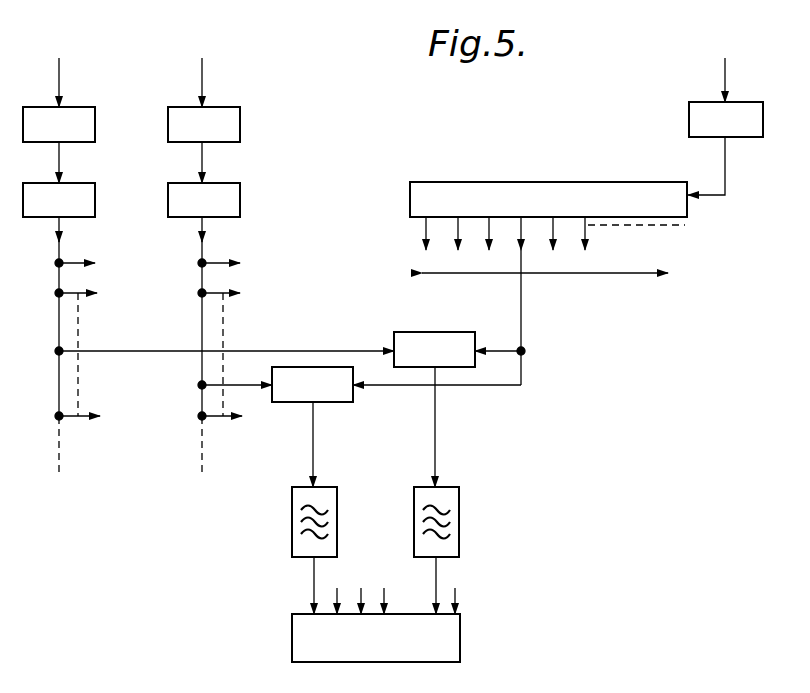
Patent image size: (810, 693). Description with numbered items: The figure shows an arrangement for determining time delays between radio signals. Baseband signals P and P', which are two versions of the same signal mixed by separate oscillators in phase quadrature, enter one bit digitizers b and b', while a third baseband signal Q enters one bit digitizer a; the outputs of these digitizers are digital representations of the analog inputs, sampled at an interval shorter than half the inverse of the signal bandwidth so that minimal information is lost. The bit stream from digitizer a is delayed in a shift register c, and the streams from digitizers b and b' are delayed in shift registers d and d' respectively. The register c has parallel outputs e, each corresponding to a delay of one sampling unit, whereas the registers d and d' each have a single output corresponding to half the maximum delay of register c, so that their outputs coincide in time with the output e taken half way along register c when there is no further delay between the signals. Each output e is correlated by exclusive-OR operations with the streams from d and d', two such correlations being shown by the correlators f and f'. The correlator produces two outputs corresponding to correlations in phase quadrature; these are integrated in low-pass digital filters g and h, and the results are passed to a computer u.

The baseband signal P is at (56, 69).
The baseband signal P' is at (205, 68).
The baseband signal Q is at (724, 67).
The one bit digitizer a is at (678, 85).
The one bit digitizer b is at (88, 103).
The one bit digitizer b' is at (234, 103).
The shift register c is at (497, 158).
The shift register d is at (98, 330).
The shift register d' is at (256, 330).
The parallel outputs e is at (545, 261).
The correlation f is at (372, 334).
The correlation f' is at (327, 363).
The low-pass digital filter g is at (304, 522).
The low-pass digital filter h is at (445, 522).
The computer u is at (448, 637).